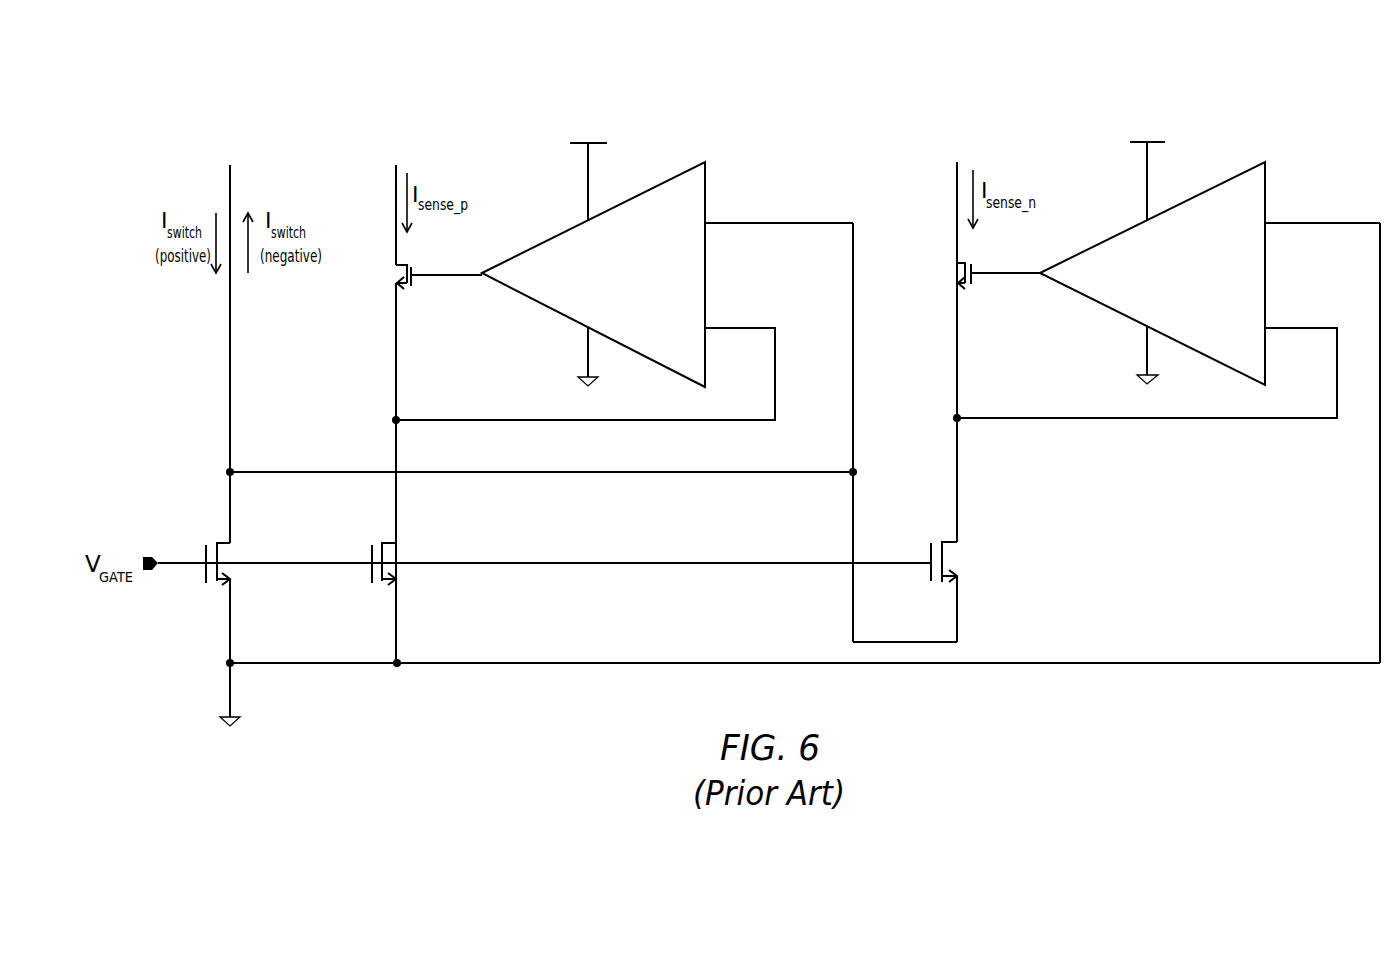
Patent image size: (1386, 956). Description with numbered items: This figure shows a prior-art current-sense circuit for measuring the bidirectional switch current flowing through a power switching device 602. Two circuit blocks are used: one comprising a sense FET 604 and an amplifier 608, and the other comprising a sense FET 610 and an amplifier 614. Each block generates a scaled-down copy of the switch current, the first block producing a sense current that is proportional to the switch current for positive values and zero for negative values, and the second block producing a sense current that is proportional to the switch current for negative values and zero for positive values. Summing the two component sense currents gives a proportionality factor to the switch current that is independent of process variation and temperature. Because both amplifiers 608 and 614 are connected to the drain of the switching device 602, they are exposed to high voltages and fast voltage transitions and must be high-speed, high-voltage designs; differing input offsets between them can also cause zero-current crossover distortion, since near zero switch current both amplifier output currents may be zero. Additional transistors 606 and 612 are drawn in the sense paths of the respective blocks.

The switching device 602 is at (223, 542).
The sense FET 604 is at (390, 542).
The positive sense transistor 606 is at (401, 287).
The amplifier 608 is at (542, 242).
The sense FET 610 is at (953, 538).
The negative sense transistor 612 is at (960, 287).
The amplifier 614 is at (1102, 242).